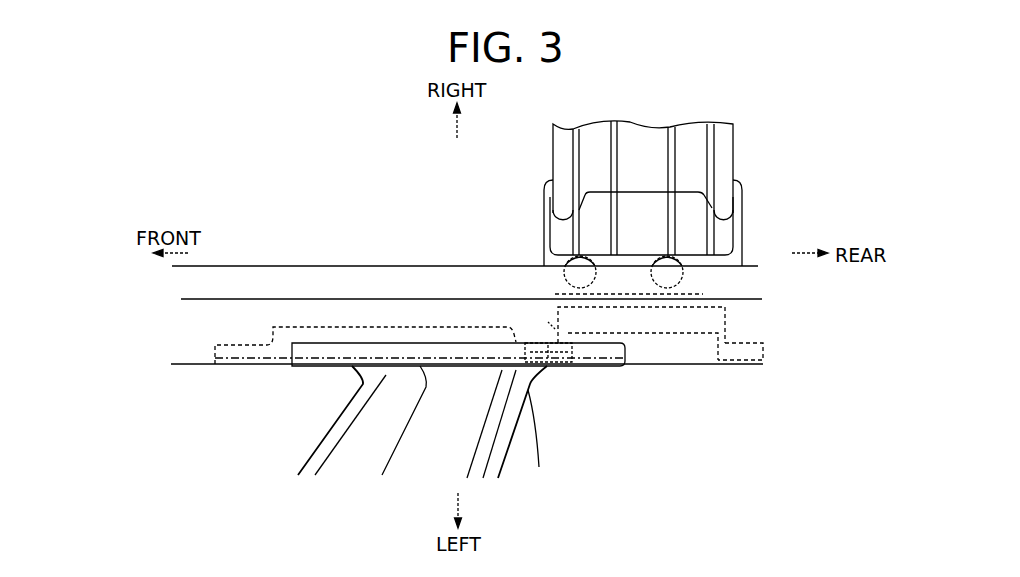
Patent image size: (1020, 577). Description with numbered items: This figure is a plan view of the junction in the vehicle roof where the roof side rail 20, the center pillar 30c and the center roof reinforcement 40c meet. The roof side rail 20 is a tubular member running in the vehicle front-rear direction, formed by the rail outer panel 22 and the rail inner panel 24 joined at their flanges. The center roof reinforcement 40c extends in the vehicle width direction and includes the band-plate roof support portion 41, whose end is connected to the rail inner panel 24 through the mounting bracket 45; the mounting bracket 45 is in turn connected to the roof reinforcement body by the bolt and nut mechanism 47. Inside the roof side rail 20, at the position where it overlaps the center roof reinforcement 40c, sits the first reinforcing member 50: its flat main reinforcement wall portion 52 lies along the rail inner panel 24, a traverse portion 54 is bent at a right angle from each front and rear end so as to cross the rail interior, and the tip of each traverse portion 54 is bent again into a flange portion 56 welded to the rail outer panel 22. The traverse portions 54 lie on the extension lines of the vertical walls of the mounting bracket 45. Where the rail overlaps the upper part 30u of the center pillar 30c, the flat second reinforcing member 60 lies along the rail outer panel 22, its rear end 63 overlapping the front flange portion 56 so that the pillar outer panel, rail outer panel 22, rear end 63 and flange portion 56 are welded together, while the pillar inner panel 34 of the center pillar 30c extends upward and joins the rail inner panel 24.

The roof side rail 20 is at (318, 270).
The rail outer panel 22 is at (232, 327).
The rail inner panel 24 is at (740, 318).
The upper part of the center pillar 30u is at (491, 381).
The center pillar 30c is at (538, 431).
The pillar inner panel 34 is at (424, 450).
The center roof reinforcement 40c is at (664, 195).
The roof support portion 41 is at (648, 168).
The mounting bracket 45 is at (630, 258).
The bolt & nut mechanism 47 is at (584, 256).
The first reinforcing member 50 is at (658, 332).
The main reinforcement wall portion 52 is at (703, 298).
The traverse portion 54 is at (548, 322).
The flange portion 56 is at (737, 352).
The second reinforcing member 60 is at (376, 333).
The rear end of the second reinforcing member 63 is at (548, 368).